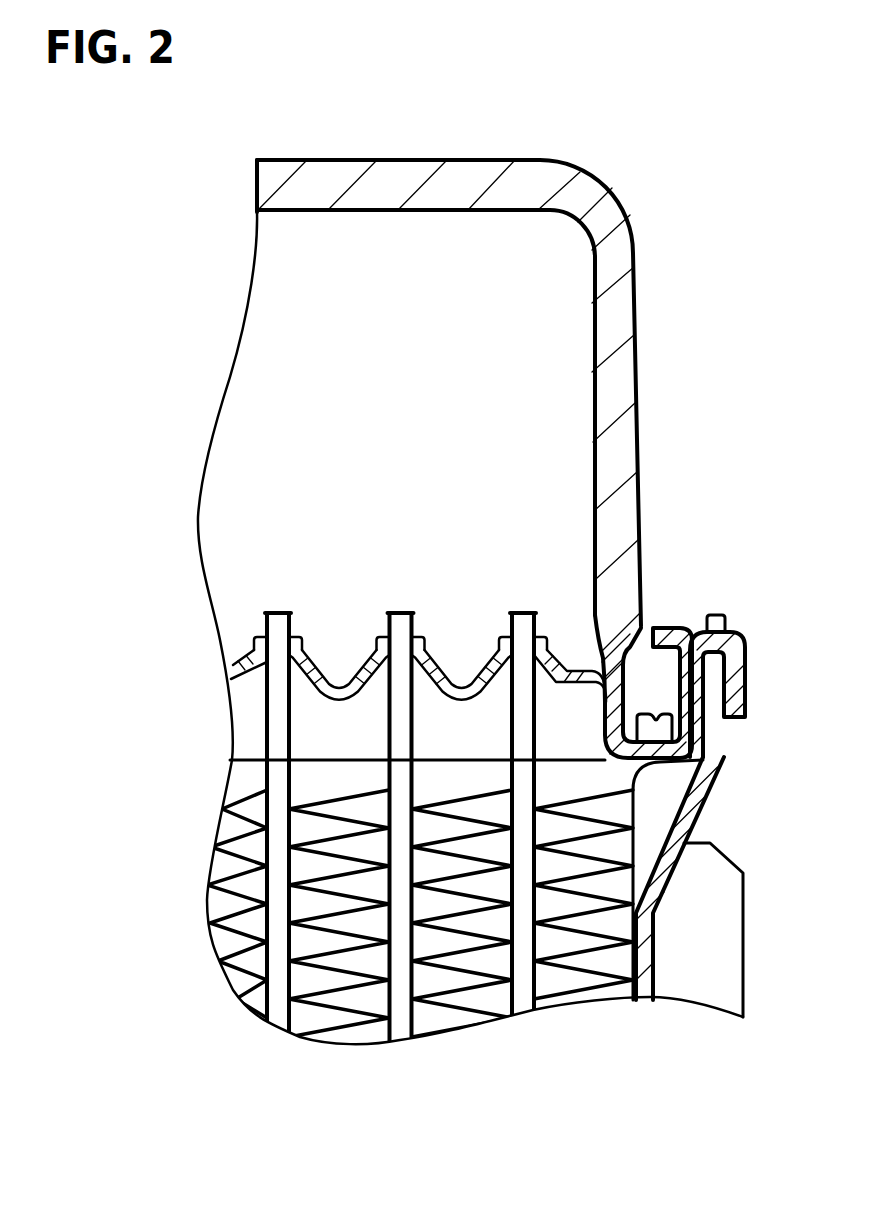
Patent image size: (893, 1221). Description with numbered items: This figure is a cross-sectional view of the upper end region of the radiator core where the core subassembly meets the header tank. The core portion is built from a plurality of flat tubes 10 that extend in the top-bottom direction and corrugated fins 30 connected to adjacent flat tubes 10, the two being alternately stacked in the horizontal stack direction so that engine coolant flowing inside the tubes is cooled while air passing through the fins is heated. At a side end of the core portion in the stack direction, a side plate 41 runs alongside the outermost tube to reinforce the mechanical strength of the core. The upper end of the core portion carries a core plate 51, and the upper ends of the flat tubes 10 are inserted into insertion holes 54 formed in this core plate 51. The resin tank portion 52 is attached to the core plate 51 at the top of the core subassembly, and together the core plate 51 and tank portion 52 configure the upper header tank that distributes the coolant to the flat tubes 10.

The flat tube 10 is at (505, 998).
The corrugated fin 30 is at (583, 970).
The side plate 41 is at (695, 817).
The core plate 51 is at (580, 670).
The tank portion 52 is at (625, 370).
The insertion hole 54 is at (553, 645).